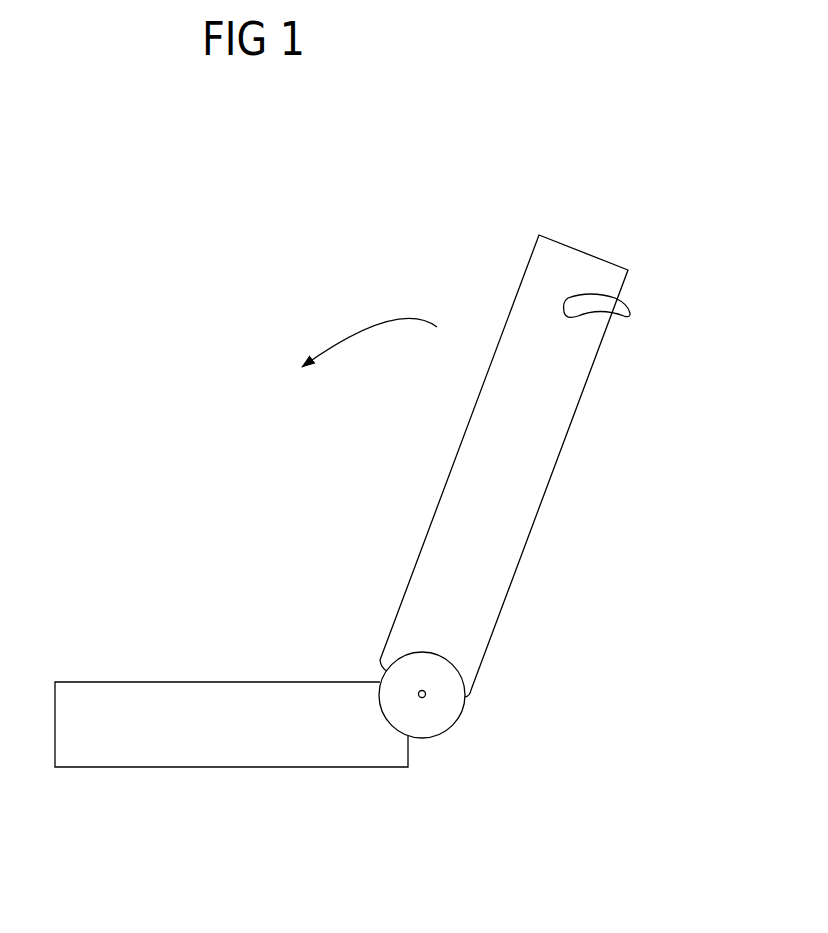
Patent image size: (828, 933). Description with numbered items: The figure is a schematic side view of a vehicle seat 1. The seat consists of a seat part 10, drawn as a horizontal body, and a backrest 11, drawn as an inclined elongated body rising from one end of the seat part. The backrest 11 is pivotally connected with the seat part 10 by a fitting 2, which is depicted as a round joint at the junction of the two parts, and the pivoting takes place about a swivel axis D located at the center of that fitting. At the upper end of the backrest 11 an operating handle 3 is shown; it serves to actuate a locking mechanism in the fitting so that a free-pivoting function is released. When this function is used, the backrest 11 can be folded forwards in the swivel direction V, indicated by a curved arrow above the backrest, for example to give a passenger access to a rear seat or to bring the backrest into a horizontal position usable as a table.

The vehicle seat 1 is at (225, 337).
The fitting 2 is at (448, 748).
The operating handle 3 is at (618, 330).
The seat part 10 is at (173, 750).
The backrest 11 is at (508, 522).
The swivel axis D is at (425, 696).
The swivel direction V is at (369, 332).